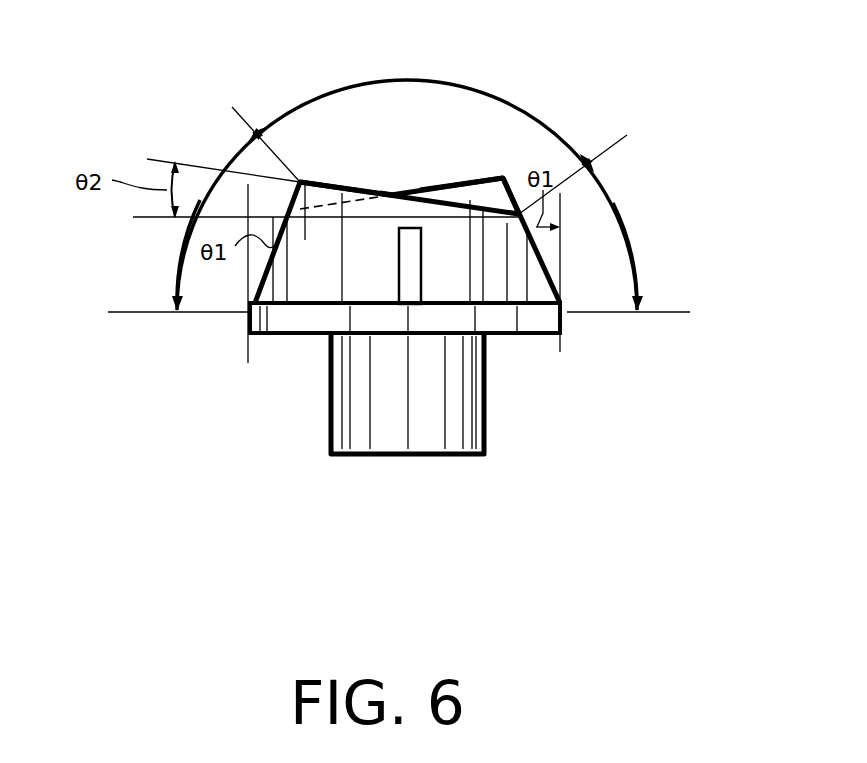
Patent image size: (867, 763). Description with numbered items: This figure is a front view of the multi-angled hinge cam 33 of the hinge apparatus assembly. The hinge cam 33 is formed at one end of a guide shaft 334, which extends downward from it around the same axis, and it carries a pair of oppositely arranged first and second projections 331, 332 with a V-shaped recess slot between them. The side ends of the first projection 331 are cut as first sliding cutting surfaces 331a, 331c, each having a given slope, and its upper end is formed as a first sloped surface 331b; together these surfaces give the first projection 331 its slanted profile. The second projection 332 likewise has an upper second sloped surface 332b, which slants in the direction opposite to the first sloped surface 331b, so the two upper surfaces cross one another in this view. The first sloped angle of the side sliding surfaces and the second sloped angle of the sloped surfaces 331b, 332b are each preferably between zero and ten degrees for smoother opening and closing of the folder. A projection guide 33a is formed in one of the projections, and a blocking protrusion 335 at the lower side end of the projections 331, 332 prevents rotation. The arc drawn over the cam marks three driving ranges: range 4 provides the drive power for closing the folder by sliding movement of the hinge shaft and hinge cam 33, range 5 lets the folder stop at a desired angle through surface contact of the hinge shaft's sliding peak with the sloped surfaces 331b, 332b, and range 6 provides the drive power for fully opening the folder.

The multi-angled hinge cam 33 is at (537, 402).
The projection guide 33a is at (399, 275).
The first projection 331 is at (450, 272).
The first sliding cutting surface 331a is at (292, 207).
The first sloped surface 331b is at (362, 192).
The first sliding cutting surface 331c is at (552, 274).
The second projection 332 is at (467, 197).
The second sloped surface 332b is at (435, 188).
The guide shaft 334 is at (445, 435).
The blocking protrusion 335 is at (288, 320).
The driving range for closing the folder 4 is at (180, 281).
The driving range for stopping the folder 5 is at (312, 98).
The driving range for fully opening the folder 6 is at (614, 204).